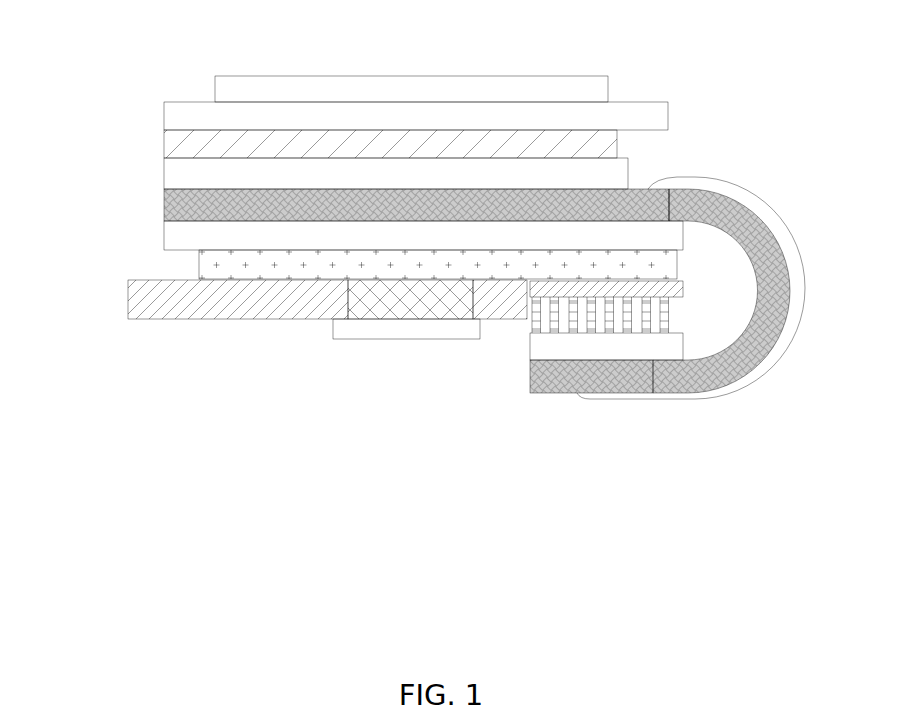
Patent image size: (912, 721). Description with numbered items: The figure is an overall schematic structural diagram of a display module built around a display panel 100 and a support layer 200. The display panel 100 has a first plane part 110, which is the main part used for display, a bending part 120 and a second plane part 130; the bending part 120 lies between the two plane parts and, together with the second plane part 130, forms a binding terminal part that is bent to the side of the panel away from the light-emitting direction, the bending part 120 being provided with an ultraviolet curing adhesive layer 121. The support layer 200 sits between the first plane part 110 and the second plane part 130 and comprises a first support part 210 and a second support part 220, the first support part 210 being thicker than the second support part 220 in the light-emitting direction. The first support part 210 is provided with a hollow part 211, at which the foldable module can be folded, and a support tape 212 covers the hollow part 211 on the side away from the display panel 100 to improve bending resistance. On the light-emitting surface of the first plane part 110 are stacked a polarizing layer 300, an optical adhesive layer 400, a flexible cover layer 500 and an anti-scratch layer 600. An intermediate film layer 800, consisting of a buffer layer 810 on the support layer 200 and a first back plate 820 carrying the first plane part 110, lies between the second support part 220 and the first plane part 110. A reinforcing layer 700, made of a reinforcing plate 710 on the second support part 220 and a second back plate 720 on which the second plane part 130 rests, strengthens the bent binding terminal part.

The display panel 100 is at (518, 337).
The first plane part 110 is at (392, 207).
The bending part 120 is at (724, 279).
The ultraviolet curing adhesive layer 121 is at (797, 273).
The second plane part 130 is at (605, 373).
The support layer 200 is at (462, 467).
The first support part 210 is at (327, 345).
The hollow part 211 is at (397, 298).
The support tape 212 is at (448, 330).
The second support part 220 is at (623, 290).
The polarizing layer 300 is at (467, 175).
The optical adhesive layer 400 is at (262, 145).
The flexible cover layer 500 is at (422, 117).
The anti-scratch layer 600 is at (583, 87).
The reinforcing layer 700 is at (541, 385).
The reinforcing plate 710 is at (553, 317).
The second back plate 720 is at (568, 347).
The intermediate film layer 800 is at (349, 242).
The buffer layer 810 is at (203, 270).
The first back plate 820 is at (180, 240).